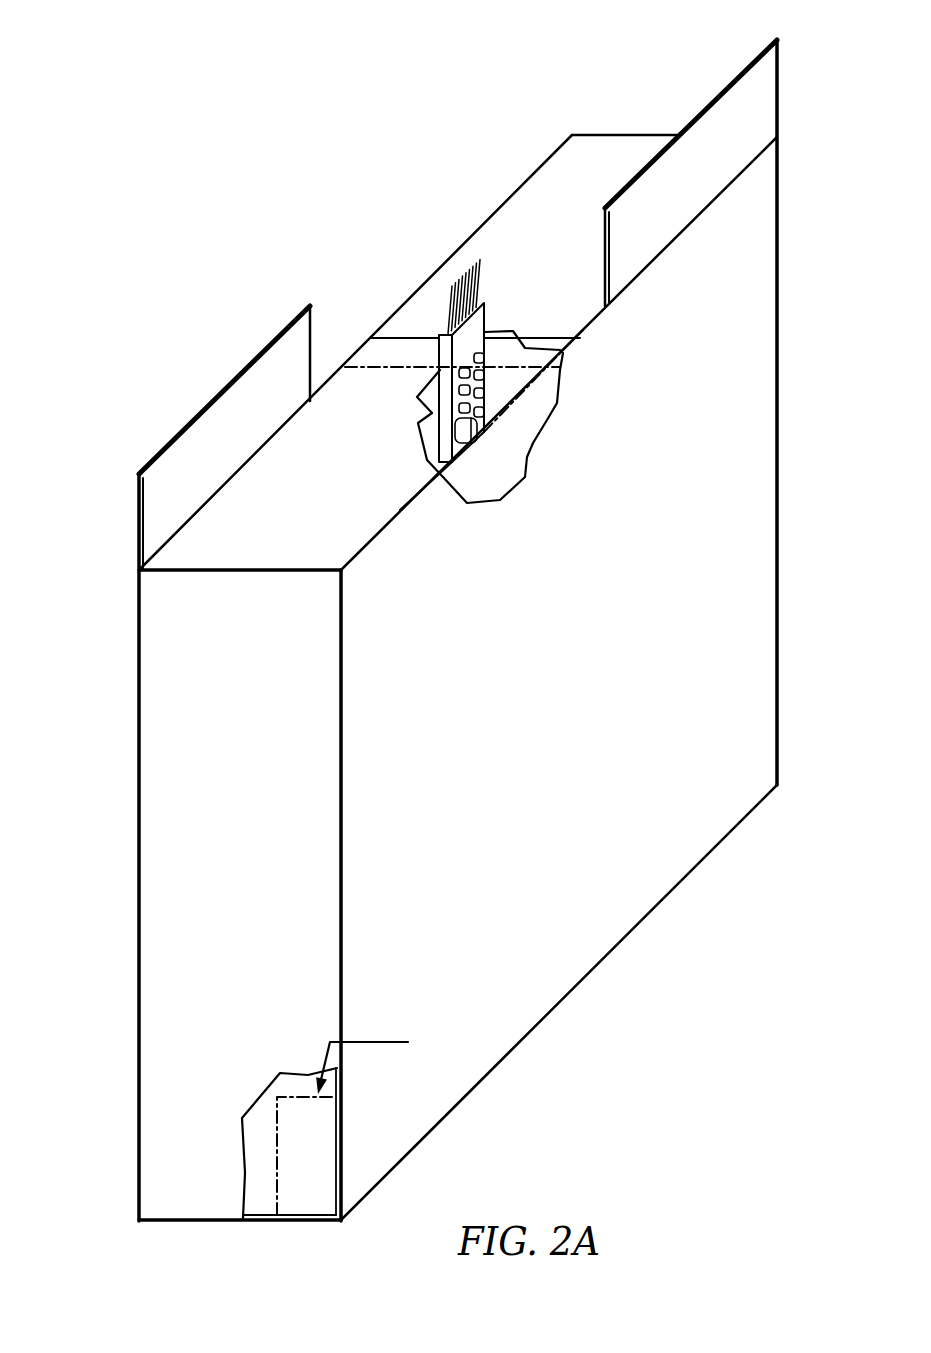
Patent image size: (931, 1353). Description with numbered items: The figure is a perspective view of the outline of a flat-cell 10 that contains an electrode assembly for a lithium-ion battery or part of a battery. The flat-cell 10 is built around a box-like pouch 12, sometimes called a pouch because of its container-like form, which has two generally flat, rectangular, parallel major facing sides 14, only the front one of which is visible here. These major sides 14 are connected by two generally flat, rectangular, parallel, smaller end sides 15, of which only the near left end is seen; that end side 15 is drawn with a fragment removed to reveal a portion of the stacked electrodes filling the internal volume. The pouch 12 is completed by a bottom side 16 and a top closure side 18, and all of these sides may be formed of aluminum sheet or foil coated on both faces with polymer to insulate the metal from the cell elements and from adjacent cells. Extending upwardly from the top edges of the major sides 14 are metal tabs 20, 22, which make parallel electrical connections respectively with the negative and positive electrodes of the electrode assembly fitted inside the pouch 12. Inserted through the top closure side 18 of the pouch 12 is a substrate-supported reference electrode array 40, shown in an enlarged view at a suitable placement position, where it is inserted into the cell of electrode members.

The flat-cell 10 is at (296, 209).
The pouch 12 is at (126, 1009).
The major facing side 14 is at (607, 837).
The end side 15 is at (180, 862).
The bottom side 16 is at (197, 1222).
The top closure side 18 is at (555, 203).
The metal tab 20 is at (758, 107).
The metal tab 22 is at (136, 511).
The substrate-supported reference electrode array 40 is at (428, 317).